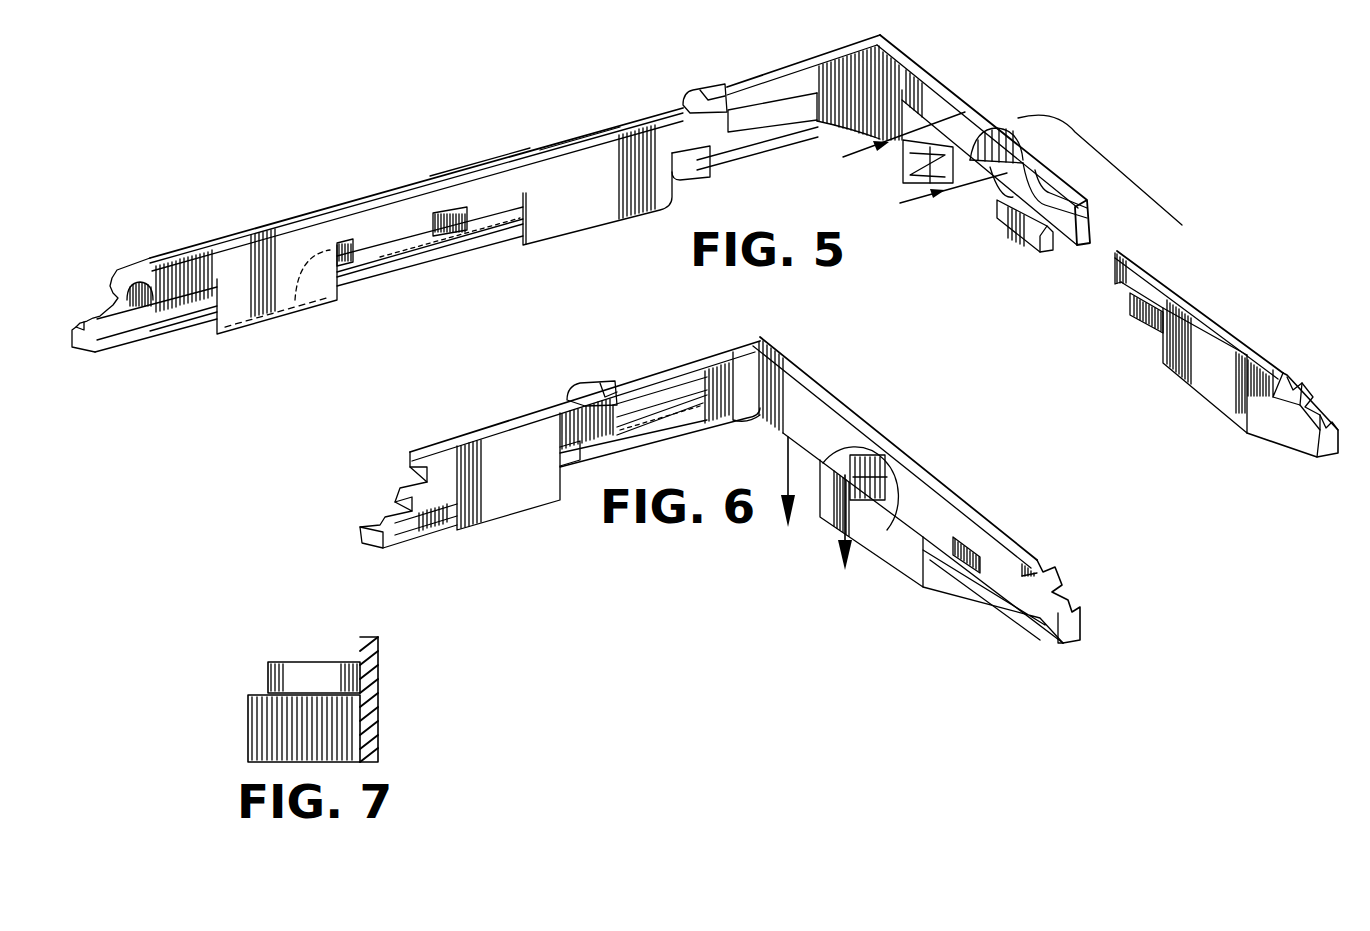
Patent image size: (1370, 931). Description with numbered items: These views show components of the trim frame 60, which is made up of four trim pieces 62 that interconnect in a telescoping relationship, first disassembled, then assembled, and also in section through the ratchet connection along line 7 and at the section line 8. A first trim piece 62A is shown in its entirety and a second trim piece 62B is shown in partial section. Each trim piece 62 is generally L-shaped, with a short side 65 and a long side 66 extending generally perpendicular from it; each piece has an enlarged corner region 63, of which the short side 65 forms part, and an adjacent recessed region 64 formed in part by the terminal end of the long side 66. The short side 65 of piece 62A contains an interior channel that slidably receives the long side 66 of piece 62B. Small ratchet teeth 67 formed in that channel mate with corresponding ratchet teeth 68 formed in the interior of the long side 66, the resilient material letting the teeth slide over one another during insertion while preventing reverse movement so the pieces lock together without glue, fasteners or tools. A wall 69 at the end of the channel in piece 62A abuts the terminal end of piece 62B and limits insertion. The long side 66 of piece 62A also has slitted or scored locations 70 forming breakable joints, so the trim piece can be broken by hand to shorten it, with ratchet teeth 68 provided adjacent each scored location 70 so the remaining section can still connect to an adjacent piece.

In FIG. 5, the trim frame 60 is at (1116, 176).
In FIG. 5, the trim piece 62 is at (390, 212).
In FIG. 6, the trim piece 62 is at (571, 444).
In FIG. 5, the first trim piece 62A is at (933, 64).
In FIG. 6, the first trim piece 62A is at (837, 367).
In FIG. 7, the first trim piece 62A is at (267, 672).
In FIG. 5, the second trim piece 62B is at (1272, 347).
In FIG. 6, the second trim piece 62B is at (997, 513).
In FIG. 5, the enlarged corner region 63 is at (778, 75).
In FIG. 6, the enlarged corner region 63 is at (761, 338).
In FIG. 5, the recessed region 64 is at (580, 140).
In FIG. 6, the recessed region 64 is at (592, 393).
In FIG. 5, the short side 65 is at (975, 120).
In FIG. 5, the long side 66 is at (507, 160).
In FIG. 5, the ratchet teeth 67 is at (1010, 156).
In FIG. 6, the ratchet teeth 67 is at (873, 440).
In FIG. 7, the ratchet teeth 67 is at (277, 720).
In FIG. 5, the ratchet teeth 68 is at (153, 310).
In FIG. 6, the ratchet teeth 68 is at (913, 447).
In FIG. 5, the wall 69 is at (907, 153).
In FIG. 7, the wall 69 is at (367, 645).
In FIG. 5, the scored locations 70 is at (420, 255).
In FIG. 6, the scored locations 70 is at (660, 418).
In FIG. 5, the section line 7— 7 is at (914, 168).
In FIG. 6, the section line 8- 8 is at (816, 517).